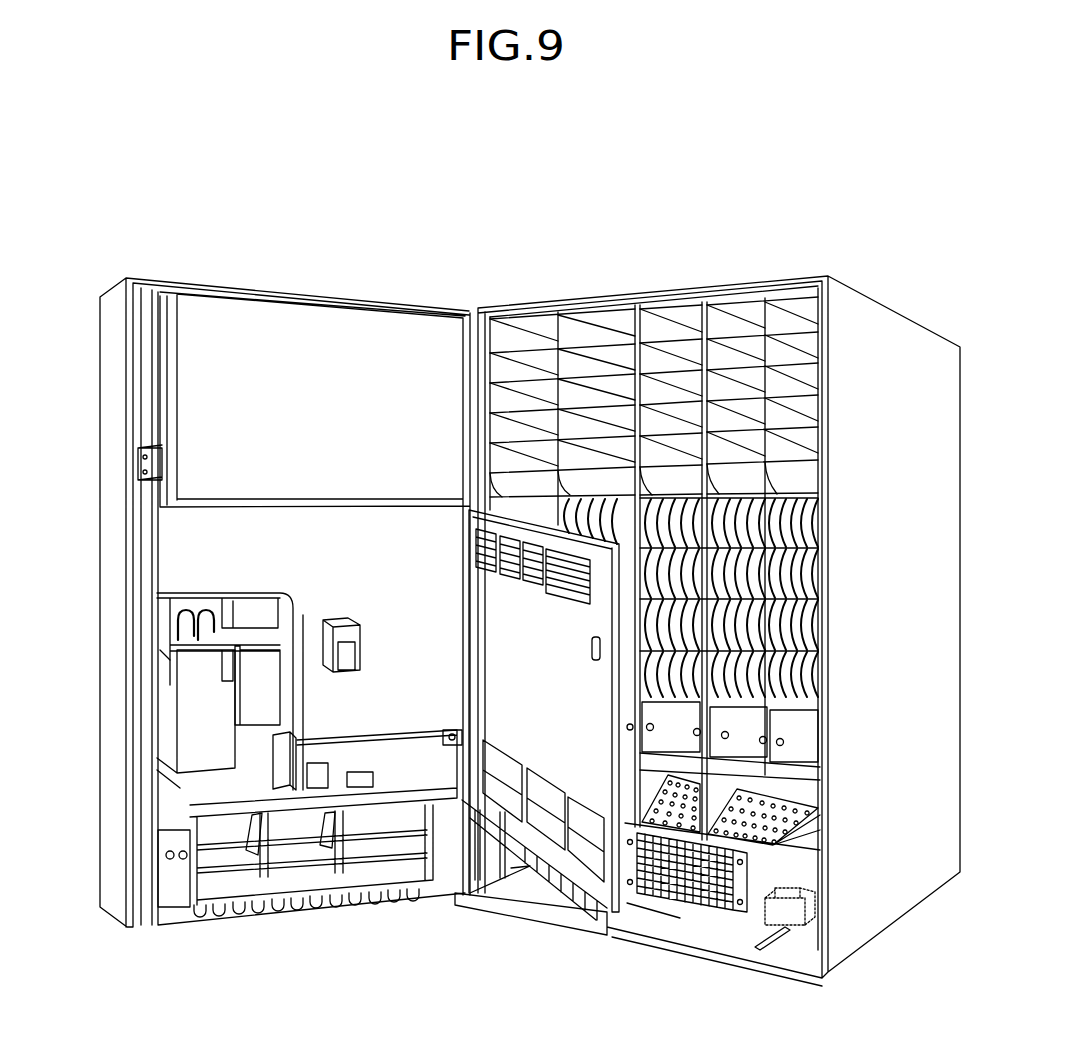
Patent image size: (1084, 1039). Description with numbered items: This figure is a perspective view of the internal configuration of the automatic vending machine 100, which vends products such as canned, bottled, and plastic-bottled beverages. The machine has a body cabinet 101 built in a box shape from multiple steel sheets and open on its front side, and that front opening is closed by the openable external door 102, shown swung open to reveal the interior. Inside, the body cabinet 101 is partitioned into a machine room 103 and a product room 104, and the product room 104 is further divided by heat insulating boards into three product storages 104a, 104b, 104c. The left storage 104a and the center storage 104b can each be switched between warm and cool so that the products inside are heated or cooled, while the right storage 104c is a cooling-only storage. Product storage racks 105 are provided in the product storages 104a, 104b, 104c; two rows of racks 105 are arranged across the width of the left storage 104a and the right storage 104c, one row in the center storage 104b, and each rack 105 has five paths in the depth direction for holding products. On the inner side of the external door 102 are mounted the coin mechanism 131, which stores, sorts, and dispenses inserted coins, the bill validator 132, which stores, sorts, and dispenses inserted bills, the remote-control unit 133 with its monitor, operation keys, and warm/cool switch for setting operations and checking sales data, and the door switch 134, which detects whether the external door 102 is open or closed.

The automatic vending machine 100 is at (855, 189).
The body cabinet 101 is at (915, 338).
The external door 102 is at (108, 369).
The machine room 103 is at (787, 870).
The product room 104 is at (675, 351).
The product storage (left storage) 104a is at (594, 335).
The product storage (center storage) 104b is at (670, 332).
The product storage (right storage) 104c is at (782, 315).
The product storage rack 105 is at (740, 625).
The coin mechanism 131 is at (203, 726).
The bill validator 132 is at (260, 691).
The remote-control unit 133 is at (342, 653).
The door switch 134 is at (452, 745).